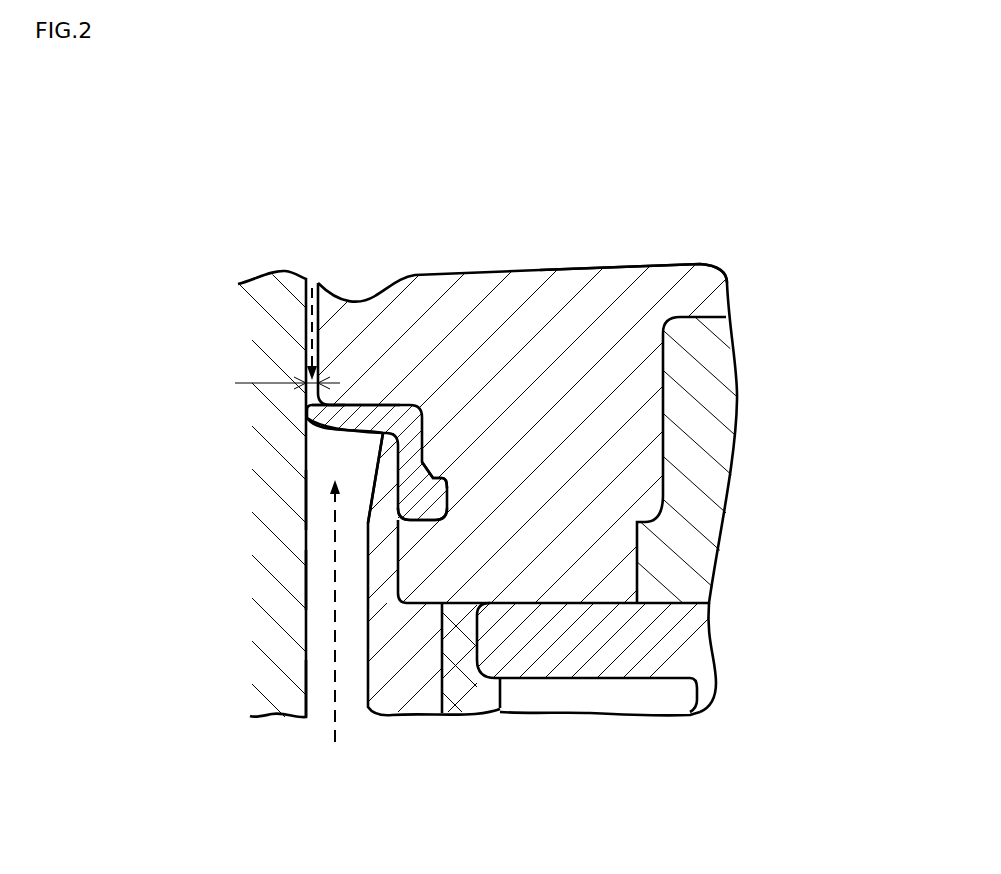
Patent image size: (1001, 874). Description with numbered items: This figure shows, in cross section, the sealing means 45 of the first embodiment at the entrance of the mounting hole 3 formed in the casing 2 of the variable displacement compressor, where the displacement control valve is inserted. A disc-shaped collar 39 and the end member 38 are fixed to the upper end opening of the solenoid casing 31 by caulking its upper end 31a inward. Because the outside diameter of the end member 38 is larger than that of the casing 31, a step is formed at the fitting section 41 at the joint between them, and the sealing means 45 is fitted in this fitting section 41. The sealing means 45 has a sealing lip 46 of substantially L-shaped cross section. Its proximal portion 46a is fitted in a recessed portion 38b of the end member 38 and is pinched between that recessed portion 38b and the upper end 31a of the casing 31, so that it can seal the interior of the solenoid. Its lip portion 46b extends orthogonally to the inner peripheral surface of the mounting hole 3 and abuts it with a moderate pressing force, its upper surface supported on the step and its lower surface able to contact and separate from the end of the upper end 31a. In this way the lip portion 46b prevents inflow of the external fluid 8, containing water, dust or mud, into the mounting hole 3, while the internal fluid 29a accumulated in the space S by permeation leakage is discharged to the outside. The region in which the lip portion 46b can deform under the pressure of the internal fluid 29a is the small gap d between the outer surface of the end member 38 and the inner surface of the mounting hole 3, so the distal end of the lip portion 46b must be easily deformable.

The casing 2 is at (250, 281).
The mounting hole 3 is at (306, 577).
The external fluid 8 is at (310, 317).
The internal fluid 29a is at (325, 683).
The casing 31 is at (395, 712).
The upper end 31a is at (380, 440).
The end member 38 is at (547, 282).
The recessed portion 38b is at (448, 478).
The collar 39 is at (718, 443).
The fitting section 41 is at (475, 422).
The sealing means 45 is at (306, 500).
The sealing lip 46 is at (403, 403).
The proximal portion 46a is at (419, 521).
The lip portion 46b is at (357, 414).
The space S is at (322, 623).
The gap d is at (280, 389).